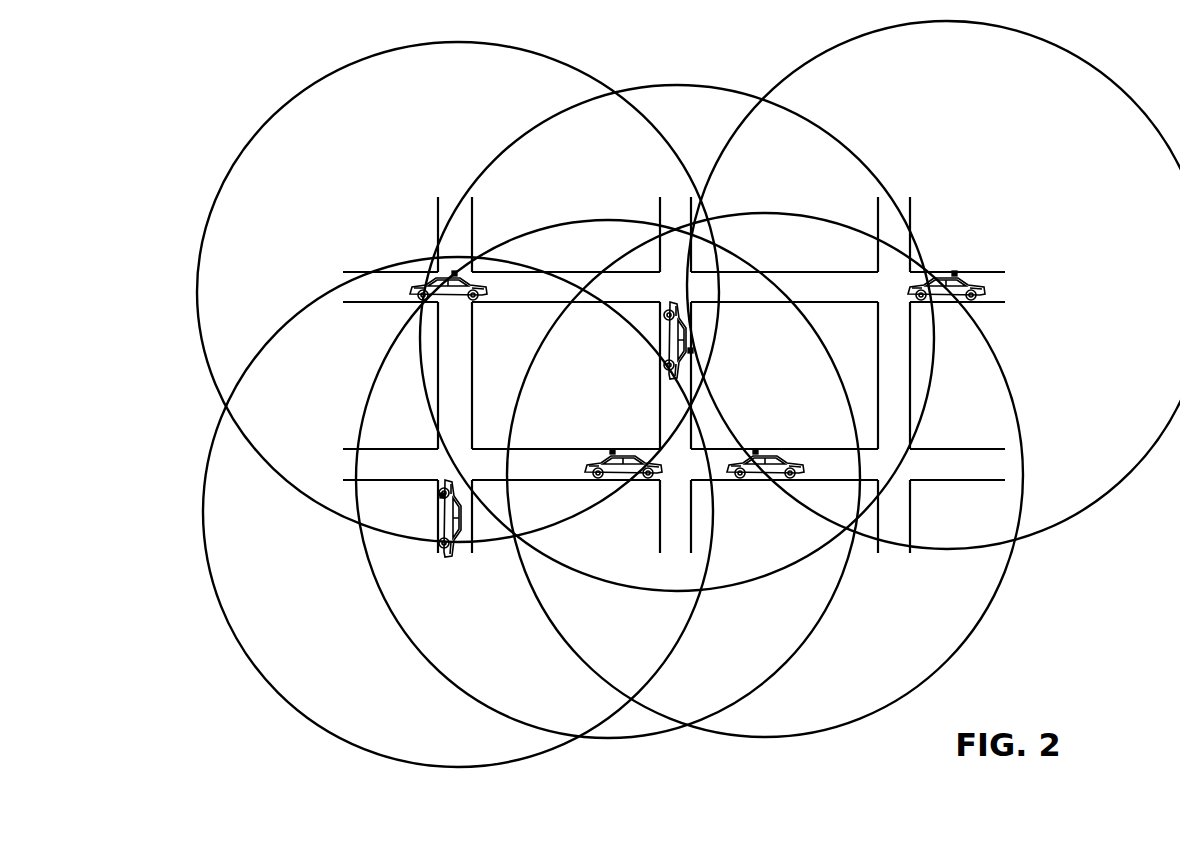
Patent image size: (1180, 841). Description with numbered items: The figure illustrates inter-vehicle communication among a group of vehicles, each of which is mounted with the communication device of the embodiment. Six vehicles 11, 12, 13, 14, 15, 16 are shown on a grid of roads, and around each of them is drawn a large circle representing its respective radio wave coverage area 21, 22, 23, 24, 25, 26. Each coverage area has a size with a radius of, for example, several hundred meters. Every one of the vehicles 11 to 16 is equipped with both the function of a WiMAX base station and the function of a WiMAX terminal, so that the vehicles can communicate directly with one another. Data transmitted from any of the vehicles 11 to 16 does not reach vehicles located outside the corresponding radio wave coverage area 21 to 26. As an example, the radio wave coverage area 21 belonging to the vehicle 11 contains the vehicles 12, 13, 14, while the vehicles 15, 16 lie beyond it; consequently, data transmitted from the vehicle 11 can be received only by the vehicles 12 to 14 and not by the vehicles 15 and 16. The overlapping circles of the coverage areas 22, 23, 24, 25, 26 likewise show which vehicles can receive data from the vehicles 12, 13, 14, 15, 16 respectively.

The vehicle 11 is at (447, 270).
The vehicle 12 is at (440, 494).
The vehicle 13 is at (613, 447).
The vehicle 14 is at (692, 350).
The vehicle 15 is at (755, 447).
The vehicle 16 is at (955, 270).
The radio wave coverage area 21 is at (282, 108).
The radio wave coverage area 22 is at (216, 597).
The radio wave coverage area 23 is at (636, 740).
The radio wave coverage area 24 is at (670, 84).
The radio wave coverage area 25 is at (983, 642).
The radio wave coverage area 26 is at (1143, 112).